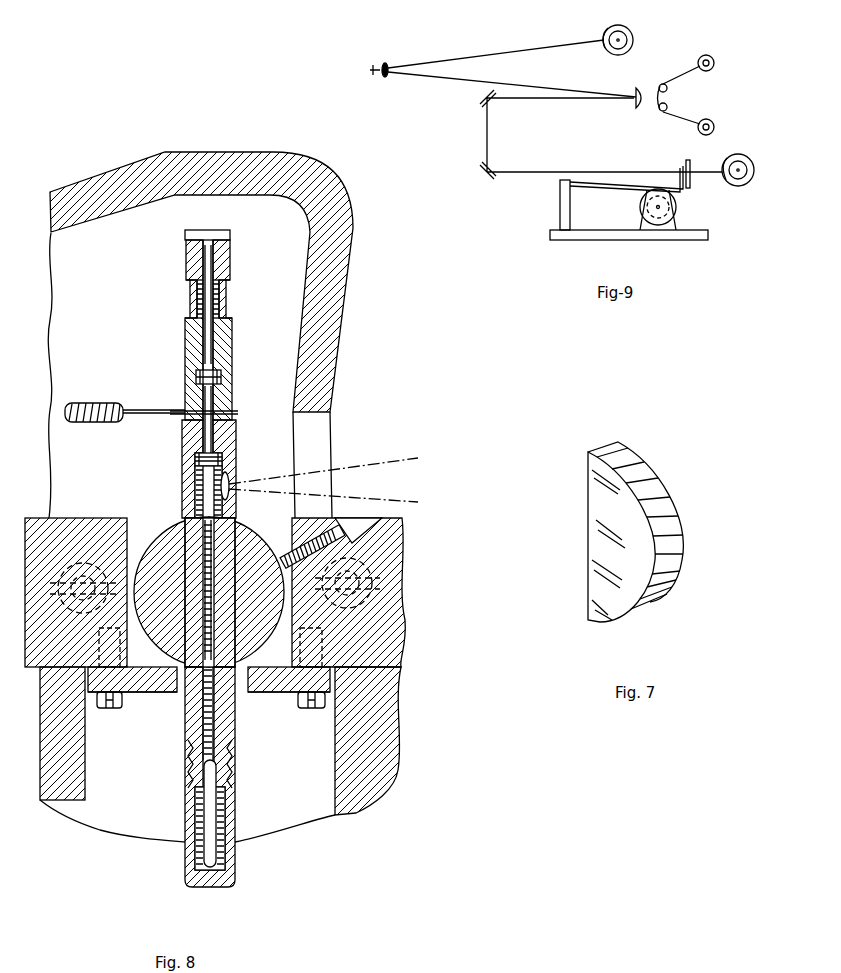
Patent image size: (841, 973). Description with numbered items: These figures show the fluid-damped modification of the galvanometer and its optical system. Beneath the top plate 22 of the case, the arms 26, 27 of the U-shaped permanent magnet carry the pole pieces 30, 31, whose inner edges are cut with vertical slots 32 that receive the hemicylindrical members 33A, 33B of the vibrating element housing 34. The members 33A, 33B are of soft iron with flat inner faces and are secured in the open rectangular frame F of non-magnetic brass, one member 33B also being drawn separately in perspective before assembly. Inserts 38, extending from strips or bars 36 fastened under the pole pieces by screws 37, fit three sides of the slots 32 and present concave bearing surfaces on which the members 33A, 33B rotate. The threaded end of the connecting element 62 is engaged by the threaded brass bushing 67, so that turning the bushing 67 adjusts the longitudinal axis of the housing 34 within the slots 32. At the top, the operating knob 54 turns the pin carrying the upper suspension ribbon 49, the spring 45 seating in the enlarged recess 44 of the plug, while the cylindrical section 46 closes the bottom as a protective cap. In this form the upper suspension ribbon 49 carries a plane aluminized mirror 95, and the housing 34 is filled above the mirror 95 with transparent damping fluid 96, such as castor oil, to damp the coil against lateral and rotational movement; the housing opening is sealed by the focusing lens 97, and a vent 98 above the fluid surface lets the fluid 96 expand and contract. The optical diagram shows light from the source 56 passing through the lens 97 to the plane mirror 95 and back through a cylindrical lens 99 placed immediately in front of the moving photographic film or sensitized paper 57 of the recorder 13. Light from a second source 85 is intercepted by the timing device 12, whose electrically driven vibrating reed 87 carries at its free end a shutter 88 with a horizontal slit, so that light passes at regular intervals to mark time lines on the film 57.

In FIG. 8, the top plate 22 is at (350, 284).
In FIG. 8, the pole piece 30 is at (48, 516).
In FIG. 8, the operating knob 54 is at (231, 270).
In FIG. 8, the spring 45 is at (227, 296).
In FIG. 8, the enlarged recess 44 is at (190, 320).
In FIG. 8, the vibrating element housing 34 is at (185, 352).
In FIG. 8, the open rectangular frame F is at (175, 442).
In FIG. 8, the vent 98 is at (222, 378).
In FIG. 8, the suspension ribbon 49 is at (238, 414).
In FIG. 8, the plane aluminized mirror 95 is at (232, 466).
In FIG. 9, the plane aluminized mirror 95 is at (370, 70).
In FIG. 8, the transparent damping fluid 96 is at (197, 472).
In FIG. 8, the focusing lens 97 is at (229, 481).
In FIG. 9, the focusing lens 97 is at (386, 62).
In FIG. 8, the connecting element 62 is at (156, 410).
In FIG. 8, the vertical slot 32 is at (135, 518).
In FIG. 8, the pole piece 31 is at (402, 546).
In FIG. 8, the hemicylindrical member 33A is at (181, 518).
In FIG. 8, the hemicylindrical member 33B is at (246, 518).
In FIG. 7, the hemicylindrical member 33B is at (668, 492).
In FIG. 8, the threaded brass bushing 67 is at (346, 521).
In FIG. 8, the insert 38 is at (152, 693).
In FIG. 8, the screw 37 is at (112, 710).
In FIG. 8, the strip or bar 36 is at (147, 693).
In FIG. 8, the arm of permanent magnet 26 is at (85, 777).
In FIG. 8, the arm of permanent magnet 27 is at (340, 765).
In FIG. 8, the cylindrical section 46 is at (185, 814).
In FIG. 9, the light source 56 is at (612, 28).
In FIG. 9, the cylindrical lens 99 is at (641, 108).
In FIG. 9, the photographic film or sensitized paper 57 is at (674, 80).
In FIG. 9, the recorder 13 is at (714, 101).
In FIG. 9, the shutter 88 is at (689, 158).
In FIG. 9, the light source 85 is at (740, 155).
In FIG. 9, the vibrating reed 87 is at (614, 190).
In FIG. 9, the timing device 12 is at (709, 212).